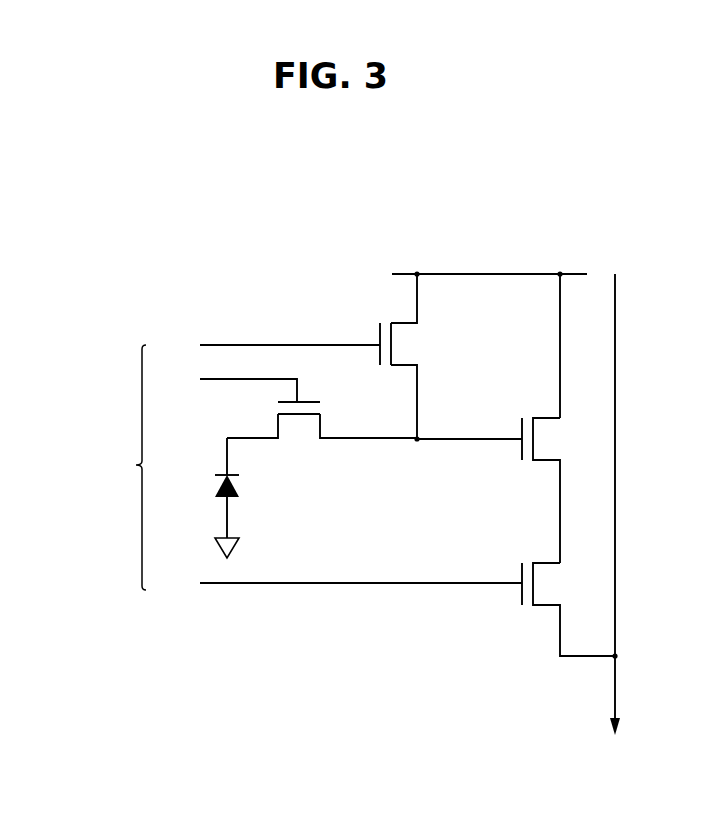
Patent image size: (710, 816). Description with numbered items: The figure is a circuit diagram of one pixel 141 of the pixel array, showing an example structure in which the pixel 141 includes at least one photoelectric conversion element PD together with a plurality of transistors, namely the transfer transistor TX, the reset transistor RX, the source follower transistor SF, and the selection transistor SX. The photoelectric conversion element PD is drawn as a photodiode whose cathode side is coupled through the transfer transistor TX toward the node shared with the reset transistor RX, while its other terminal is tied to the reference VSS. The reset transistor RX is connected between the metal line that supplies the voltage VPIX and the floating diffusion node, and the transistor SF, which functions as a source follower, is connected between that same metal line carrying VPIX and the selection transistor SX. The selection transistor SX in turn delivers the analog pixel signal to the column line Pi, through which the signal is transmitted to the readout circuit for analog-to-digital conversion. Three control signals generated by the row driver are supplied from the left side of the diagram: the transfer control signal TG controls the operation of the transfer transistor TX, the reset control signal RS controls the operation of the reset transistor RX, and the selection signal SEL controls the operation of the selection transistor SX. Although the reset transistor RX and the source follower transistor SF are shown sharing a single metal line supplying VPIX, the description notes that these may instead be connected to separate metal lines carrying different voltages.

The pixel 141 is at (594, 204).
The voltage VPIX is at (465, 275).
The reset transistor RX is at (414, 358).
The reset control signal RS is at (273, 345).
The source follower transistor SF is at (503, 418).
The selection transistor SX is at (570, 611).
The selection signal SEL is at (340, 584).
The column line Pi is at (614, 520).
The transfer transistor TX is at (322, 435).
The transfer control signal TG is at (231, 384).
The photoelectric conversion element PD is at (243, 488).
The ground voltage VSS is at (249, 549).